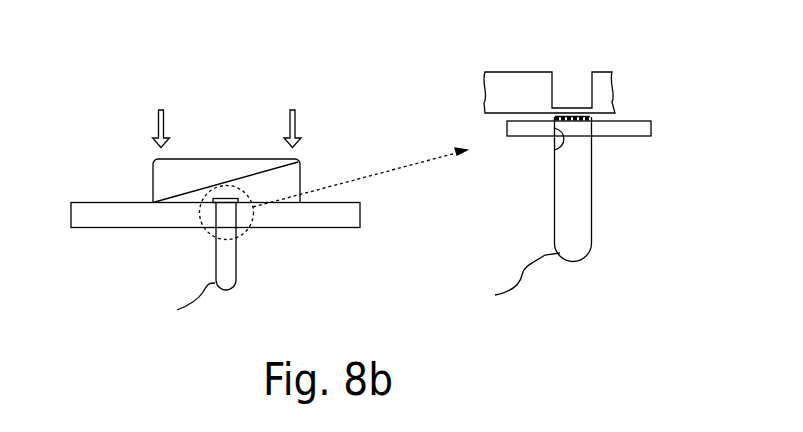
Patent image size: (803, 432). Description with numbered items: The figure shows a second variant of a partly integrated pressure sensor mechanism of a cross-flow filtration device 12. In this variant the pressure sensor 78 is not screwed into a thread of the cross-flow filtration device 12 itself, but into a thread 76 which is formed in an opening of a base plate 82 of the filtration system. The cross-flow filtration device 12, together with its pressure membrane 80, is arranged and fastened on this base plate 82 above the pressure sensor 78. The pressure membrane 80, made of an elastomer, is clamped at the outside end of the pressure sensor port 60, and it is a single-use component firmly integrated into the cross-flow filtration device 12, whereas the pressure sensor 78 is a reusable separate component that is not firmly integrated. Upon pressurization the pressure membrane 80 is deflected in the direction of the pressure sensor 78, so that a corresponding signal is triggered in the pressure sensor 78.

The cross-flow filtration device 12 is at (302, 182).
The pressure sensor port 60 is at (567, 85).
The thread 76 is at (555, 153).
The pressure sensor 78 is at (240, 260).
The pressure membrane 80 is at (570, 107).
The base plate 82 is at (107, 221).